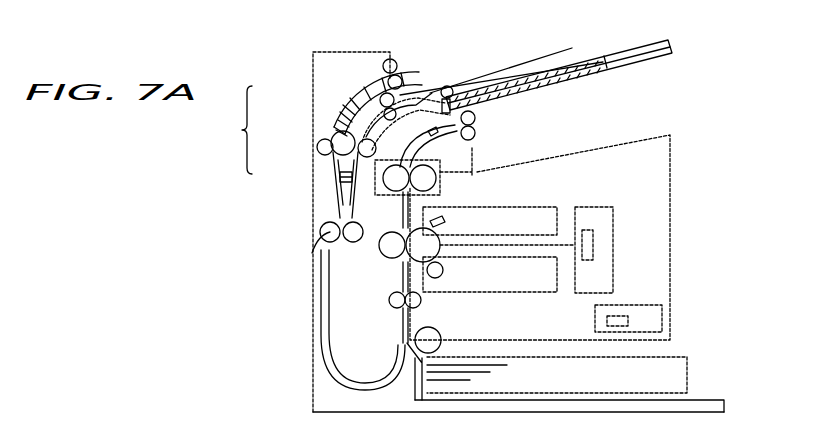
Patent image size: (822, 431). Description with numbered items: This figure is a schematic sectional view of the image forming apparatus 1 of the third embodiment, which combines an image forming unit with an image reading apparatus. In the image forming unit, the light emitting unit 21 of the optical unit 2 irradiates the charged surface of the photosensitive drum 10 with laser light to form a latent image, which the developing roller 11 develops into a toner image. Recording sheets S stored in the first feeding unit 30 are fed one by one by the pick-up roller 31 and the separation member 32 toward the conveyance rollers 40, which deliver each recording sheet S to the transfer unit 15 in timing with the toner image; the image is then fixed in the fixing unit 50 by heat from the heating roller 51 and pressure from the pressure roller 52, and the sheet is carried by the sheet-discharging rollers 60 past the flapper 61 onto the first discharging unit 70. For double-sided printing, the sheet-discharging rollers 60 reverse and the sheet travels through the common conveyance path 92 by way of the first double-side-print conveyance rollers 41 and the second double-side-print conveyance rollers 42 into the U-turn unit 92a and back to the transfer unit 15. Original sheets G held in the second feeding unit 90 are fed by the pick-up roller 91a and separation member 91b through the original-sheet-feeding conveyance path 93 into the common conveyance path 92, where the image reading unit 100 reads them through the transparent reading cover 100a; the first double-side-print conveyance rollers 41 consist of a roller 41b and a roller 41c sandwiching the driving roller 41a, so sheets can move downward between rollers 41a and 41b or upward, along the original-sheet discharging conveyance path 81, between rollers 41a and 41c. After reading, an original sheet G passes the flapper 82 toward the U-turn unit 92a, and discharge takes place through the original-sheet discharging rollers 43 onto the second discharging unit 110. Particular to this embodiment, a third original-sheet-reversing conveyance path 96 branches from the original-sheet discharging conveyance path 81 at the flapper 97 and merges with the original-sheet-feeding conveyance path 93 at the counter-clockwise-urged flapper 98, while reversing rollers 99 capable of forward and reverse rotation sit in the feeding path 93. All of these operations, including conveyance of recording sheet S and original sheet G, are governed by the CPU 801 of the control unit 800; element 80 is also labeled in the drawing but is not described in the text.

The image forming apparatus 1 is at (671, 182).
The optical unit 2 is at (600, 207).
The light emitting unit 21 is at (593, 236).
The photosensitive drum 10 is at (445, 222).
The developing roller 11 is at (443, 270).
The transfer unit 15 is at (397, 258).
The first feeding unit 30 is at (713, 397).
The pick-up roller 31 is at (438, 330).
The separation member 32 is at (415, 386).
The conveyance rollers 40 is at (421, 300).
The first double-side-print conveyance rollers 41 is at (235, 130).
The driving roller 41a is at (331, 143).
The roller 41b is at (360, 142).
The roller 41c is at (318, 150).
The second double-side-print conveyance rollers 42 is at (330, 248).
The original-sheet discharging rollers 43 is at (392, 60).
The fixing unit 50 is at (477, 172).
The heating roller 51 is at (423, 178).
The pressure roller 52 is at (380, 210).
The sheet-discharging rollers 60 is at (475, 118).
The flapper 61 is at (445, 138).
The first discharging unit 70 is at (633, 142).
The roller pair 80 is at (396, 98).
The original-sheet discharging conveyance path 81 is at (337, 113).
The flapper 82 is at (320, 235).
The second feeding unit 90 is at (607, 60).
The pick-up roller 91a is at (451, 90).
The separation member 91b is at (520, 97).
The common conveyance path 92 is at (390, 255).
The U-turn unit 92a is at (325, 343).
The original-sheet-feeding conveyance path 93 is at (441, 88).
The third original-sheet-reversing conveyance path 96 is at (352, 112).
The flapper 97 is at (342, 112).
The flapper 98 is at (350, 113).
The reversing rollers 99 is at (367, 107).
The image reading unit 100 is at (345, 210).
The reading cover 100a is at (342, 180).
The second discharging unit 110 is at (533, 58).
The control unit 800 is at (645, 305).
The CPU 801 is at (628, 320).
The original sheet G is at (645, 55).
The recording sheet S is at (686, 366).